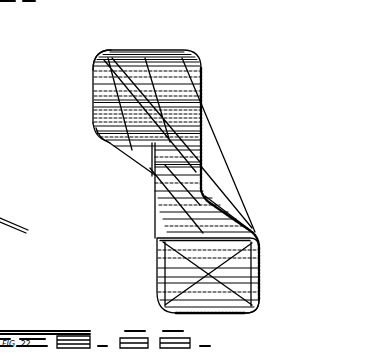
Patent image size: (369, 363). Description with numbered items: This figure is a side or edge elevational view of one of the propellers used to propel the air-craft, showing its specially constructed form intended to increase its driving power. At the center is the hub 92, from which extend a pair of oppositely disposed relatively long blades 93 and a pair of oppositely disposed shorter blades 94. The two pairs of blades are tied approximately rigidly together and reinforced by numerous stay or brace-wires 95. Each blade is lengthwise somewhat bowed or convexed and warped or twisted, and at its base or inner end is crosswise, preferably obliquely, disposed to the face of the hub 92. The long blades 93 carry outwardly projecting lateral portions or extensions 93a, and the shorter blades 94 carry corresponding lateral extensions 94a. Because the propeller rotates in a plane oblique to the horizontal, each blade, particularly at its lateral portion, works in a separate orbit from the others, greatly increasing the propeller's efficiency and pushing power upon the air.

The hub 92 is at (203, 175).
The long blade 93 is at (180, 218).
The lateral extension of long blade 93a is at (268, 197).
The short blade 94 is at (202, 75).
The lateral extension of short blade 94a is at (270, 302).
The stay or brace-wire 95 is at (212, 132).